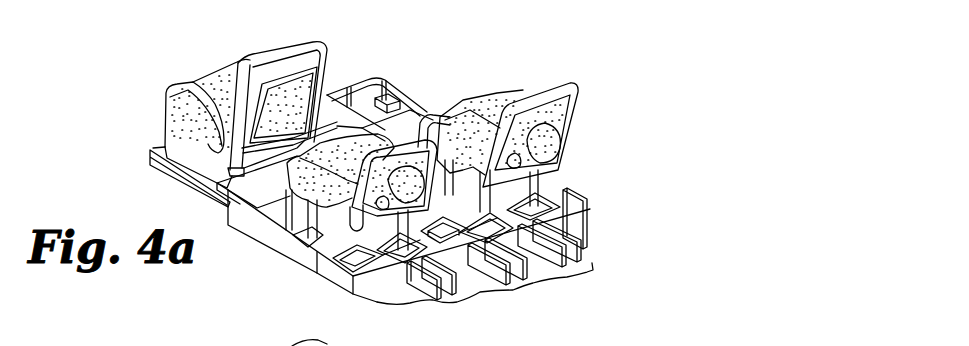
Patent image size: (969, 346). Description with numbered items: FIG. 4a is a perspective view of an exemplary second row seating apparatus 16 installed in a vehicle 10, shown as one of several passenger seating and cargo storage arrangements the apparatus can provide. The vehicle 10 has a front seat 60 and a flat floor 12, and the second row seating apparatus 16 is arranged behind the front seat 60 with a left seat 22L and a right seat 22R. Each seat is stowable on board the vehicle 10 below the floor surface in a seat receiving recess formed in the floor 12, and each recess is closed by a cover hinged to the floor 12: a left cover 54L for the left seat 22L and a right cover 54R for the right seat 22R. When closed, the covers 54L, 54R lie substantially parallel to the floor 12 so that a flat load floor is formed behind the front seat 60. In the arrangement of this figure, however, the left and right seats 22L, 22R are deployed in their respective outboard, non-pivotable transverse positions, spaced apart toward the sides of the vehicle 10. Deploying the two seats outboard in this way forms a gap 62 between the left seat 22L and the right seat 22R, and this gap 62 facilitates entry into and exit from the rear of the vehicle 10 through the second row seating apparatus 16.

The vehicle 10 is at (240, 40).
The floor 12 is at (292, 250).
The second row seating apparatus 16 is at (418, 58).
The left seat 22L is at (307, 185).
The right seat 22R is at (576, 97).
The left cover 54L is at (250, 183).
The right cover 54R is at (403, 123).
The front seat 60 is at (163, 113).
The gap 62 is at (353, 278).